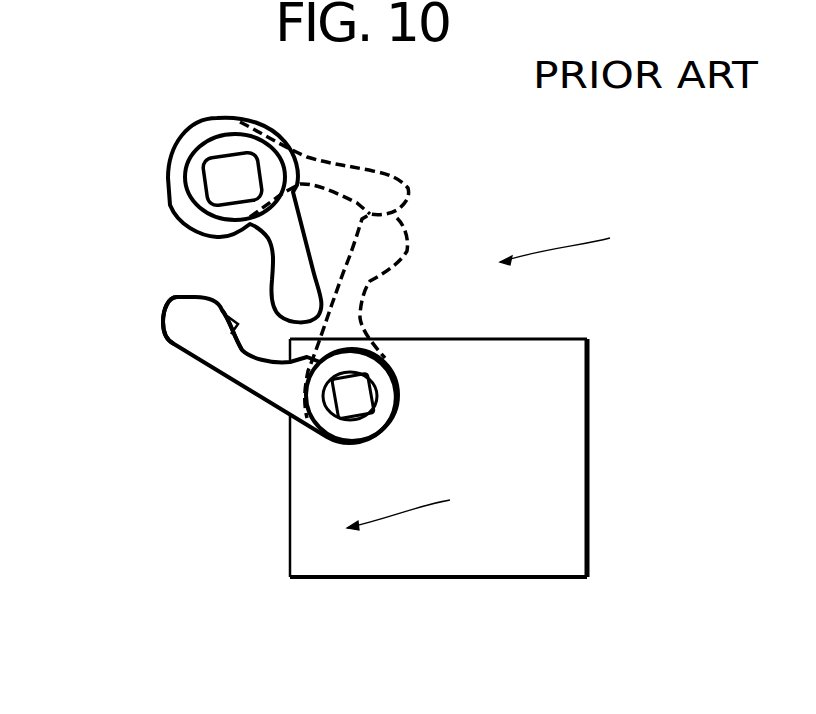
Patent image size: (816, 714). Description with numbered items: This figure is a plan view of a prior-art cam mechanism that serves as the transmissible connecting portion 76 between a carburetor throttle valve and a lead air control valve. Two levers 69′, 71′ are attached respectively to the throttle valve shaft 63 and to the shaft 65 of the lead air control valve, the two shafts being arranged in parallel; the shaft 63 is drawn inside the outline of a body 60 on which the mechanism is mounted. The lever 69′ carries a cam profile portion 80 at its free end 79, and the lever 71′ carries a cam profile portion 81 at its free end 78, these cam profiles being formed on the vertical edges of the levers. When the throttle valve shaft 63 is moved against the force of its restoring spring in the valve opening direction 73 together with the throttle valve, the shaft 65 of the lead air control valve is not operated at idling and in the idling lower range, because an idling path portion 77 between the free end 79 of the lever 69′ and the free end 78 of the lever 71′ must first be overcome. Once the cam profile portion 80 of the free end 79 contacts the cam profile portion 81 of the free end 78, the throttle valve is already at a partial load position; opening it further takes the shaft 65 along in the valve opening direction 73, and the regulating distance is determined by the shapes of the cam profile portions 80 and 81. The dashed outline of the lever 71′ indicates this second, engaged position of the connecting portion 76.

The base 60 is at (572, 513).
The throttle valve shaft 63 is at (362, 396).
The shaft of the lead air control valve 65 is at (233, 178).
The lever 69′ is at (262, 388).
The lever 71′ is at (363, 163).
The valve opening direction 73 is at (477, 447).
The transmissible connecting portion 76 is at (570, 237).
The idling path portion 77 is at (270, 272).
The free end of the lever 71' 78 is at (415, 198).
The free end of the lever 69' 79 is at (185, 312).
The cam profile portion 80 is at (228, 338).
The cam profile portion 81 is at (343, 200).